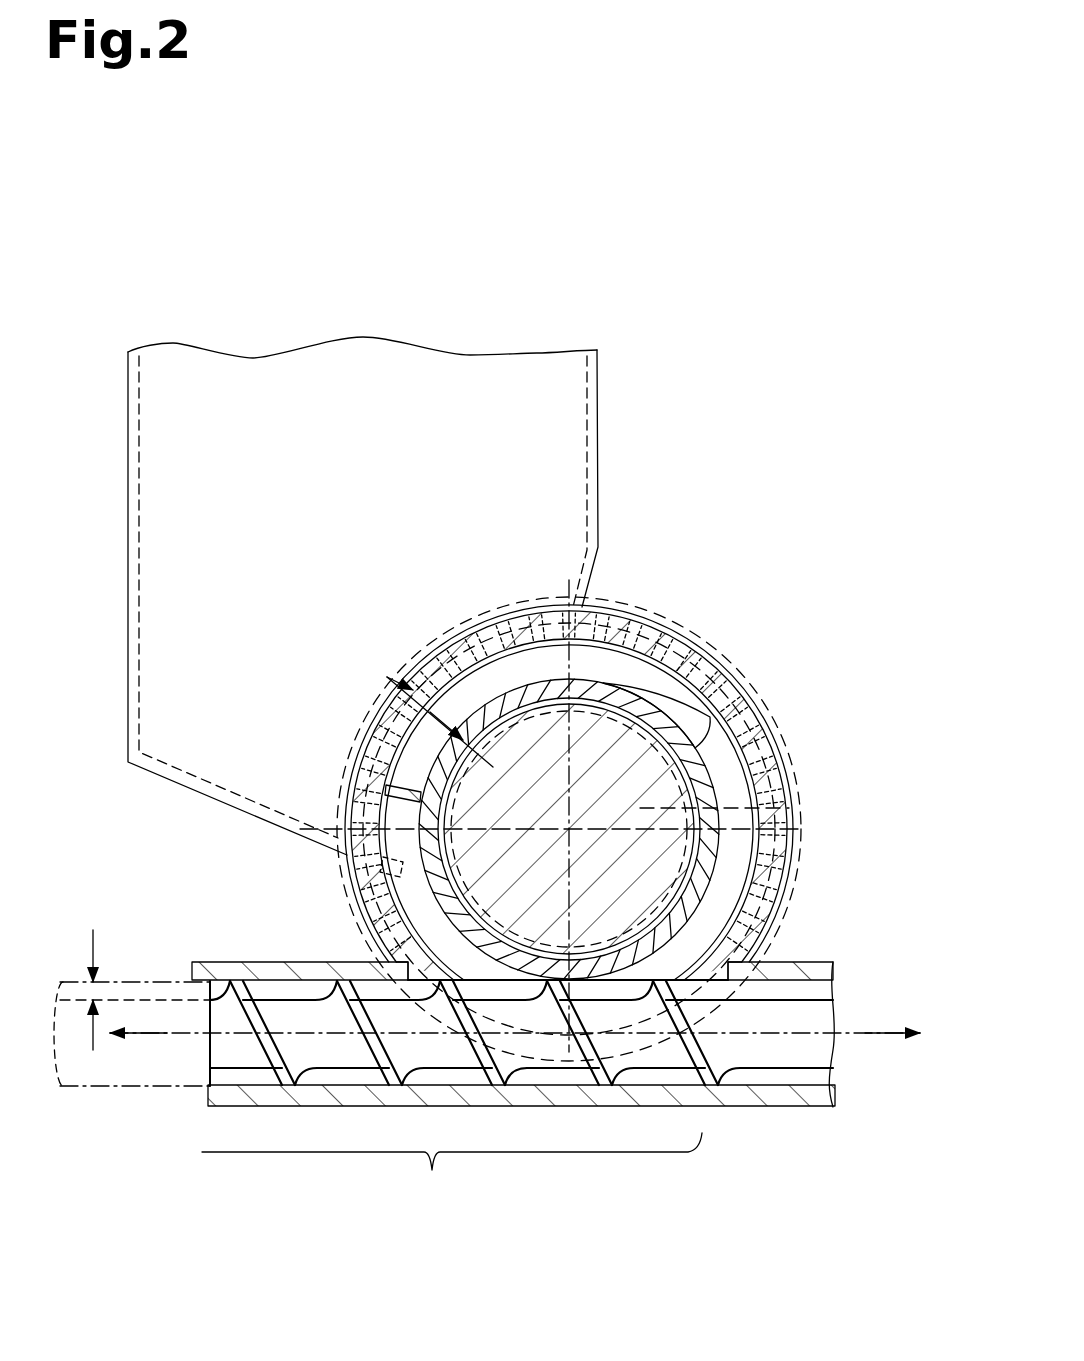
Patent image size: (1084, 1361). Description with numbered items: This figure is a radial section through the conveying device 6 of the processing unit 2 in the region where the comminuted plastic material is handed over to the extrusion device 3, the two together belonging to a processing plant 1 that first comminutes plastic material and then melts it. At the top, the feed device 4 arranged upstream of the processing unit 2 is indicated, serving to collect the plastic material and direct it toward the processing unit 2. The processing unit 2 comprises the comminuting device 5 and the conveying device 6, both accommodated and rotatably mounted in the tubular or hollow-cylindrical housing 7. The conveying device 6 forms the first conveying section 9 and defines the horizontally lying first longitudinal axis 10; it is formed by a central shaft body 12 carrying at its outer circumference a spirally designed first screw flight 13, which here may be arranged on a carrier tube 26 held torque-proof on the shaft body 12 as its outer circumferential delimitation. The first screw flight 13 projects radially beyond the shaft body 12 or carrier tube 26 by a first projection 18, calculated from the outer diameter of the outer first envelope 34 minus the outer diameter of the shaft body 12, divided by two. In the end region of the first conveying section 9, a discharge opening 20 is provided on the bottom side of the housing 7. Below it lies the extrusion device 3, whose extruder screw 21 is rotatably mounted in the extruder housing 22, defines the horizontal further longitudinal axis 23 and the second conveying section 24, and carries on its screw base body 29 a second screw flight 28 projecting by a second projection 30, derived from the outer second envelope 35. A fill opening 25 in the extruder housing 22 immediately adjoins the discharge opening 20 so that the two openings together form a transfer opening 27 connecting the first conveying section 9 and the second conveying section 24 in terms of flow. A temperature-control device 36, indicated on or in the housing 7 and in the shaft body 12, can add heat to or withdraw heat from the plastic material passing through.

The processing plant 1 is at (775, 178).
The processing unit 2 is at (763, 675).
The extrusion device 3 is at (797, 1160).
The feed device 4 is at (562, 334).
The comminuting device 5 is at (700, 612).
The conveying device 6 is at (660, 684).
The housing 7 is at (781, 766).
The first conveying section 9 is at (733, 716).
The first longitudinal axis 10 is at (789, 808).
The shaft body 12 is at (625, 858).
The first screw flight 13 is at (613, 687).
The first projection 18 is at (363, 738).
The discharge opening 20 is at (653, 983).
The extruder screw 21 is at (332, 1090).
The extruder housing 22 is at (270, 973).
The further longitudinal axis 23 is at (192, 1040).
The second conveying section 24 is at (452, 1173).
The fill opening 25 is at (477, 1000).
The carrier tube 26 is at (427, 933).
The transfer opening 27 is at (617, 1003).
The second screw flight 28 is at (232, 970).
The screw base body 29 is at (297, 1013).
The second projection 30 is at (87, 983).
The first envelope 34 is at (433, 673).
The second envelope 35 is at (110, 1093).
The temperature-control device 36 is at (495, 615).